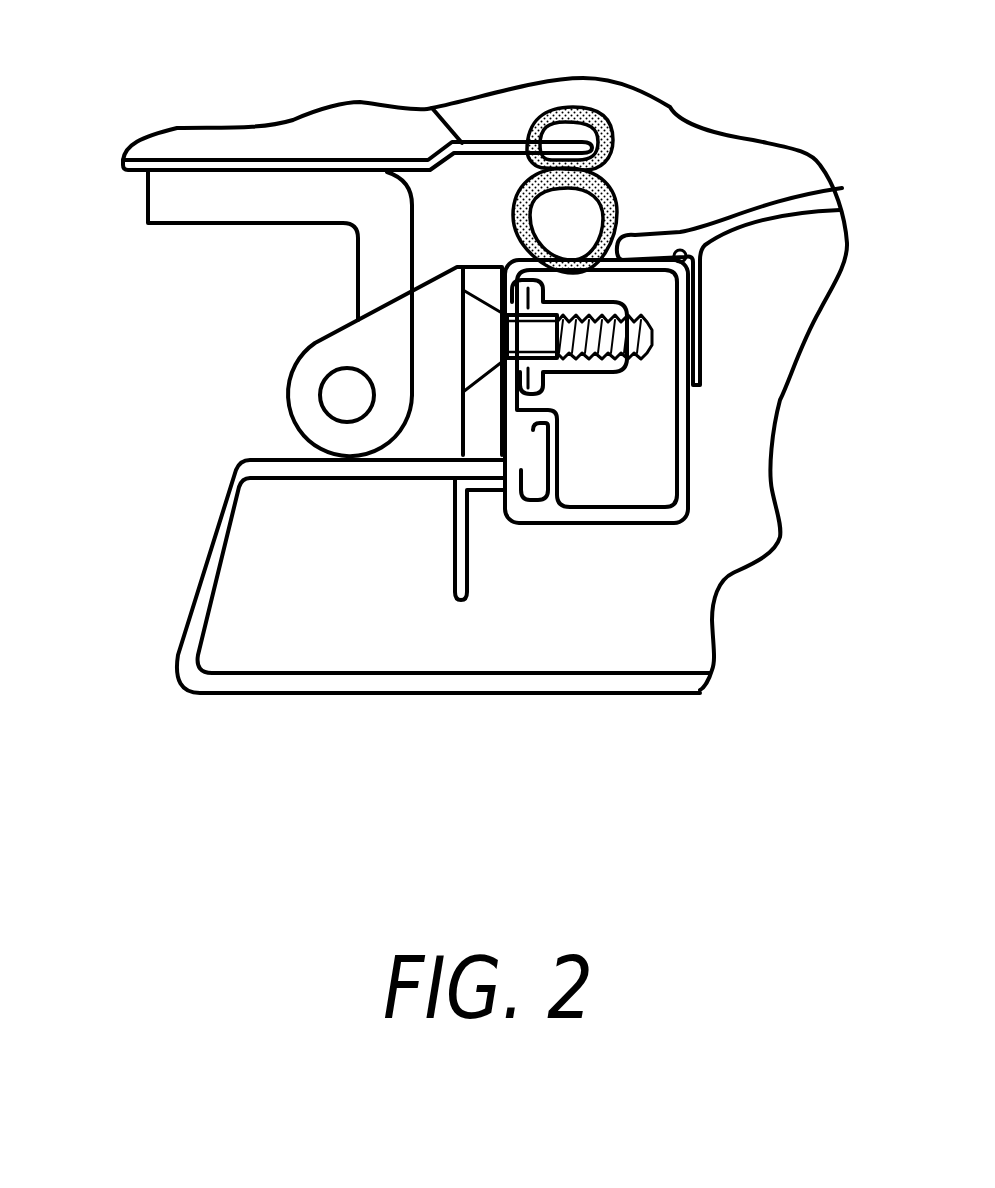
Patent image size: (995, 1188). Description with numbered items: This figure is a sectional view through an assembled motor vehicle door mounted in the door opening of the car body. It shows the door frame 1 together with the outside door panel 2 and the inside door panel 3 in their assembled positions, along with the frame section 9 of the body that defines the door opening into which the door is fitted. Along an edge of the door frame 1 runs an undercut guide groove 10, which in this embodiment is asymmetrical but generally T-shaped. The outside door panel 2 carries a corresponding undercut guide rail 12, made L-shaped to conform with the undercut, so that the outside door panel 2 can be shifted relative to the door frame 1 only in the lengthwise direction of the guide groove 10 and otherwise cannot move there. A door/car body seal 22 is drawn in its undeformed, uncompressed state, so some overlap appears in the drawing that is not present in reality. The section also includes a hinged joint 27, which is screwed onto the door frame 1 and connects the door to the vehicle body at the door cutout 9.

The door frame 1 is at (686, 444).
The outside door panel 2 is at (588, 686).
The inside door panel 3 is at (790, 203).
The frame section 9 is at (445, 128).
The guide groove 10 is at (563, 443).
The guide rail 12 is at (540, 458).
The door/car body seal 22 is at (607, 190).
The hinged joint 27 is at (253, 372).